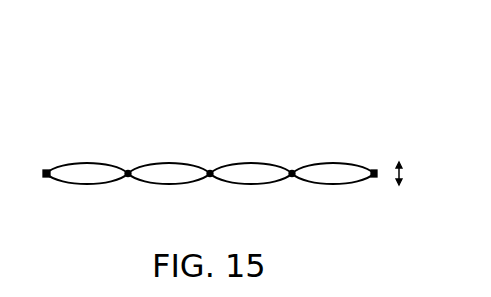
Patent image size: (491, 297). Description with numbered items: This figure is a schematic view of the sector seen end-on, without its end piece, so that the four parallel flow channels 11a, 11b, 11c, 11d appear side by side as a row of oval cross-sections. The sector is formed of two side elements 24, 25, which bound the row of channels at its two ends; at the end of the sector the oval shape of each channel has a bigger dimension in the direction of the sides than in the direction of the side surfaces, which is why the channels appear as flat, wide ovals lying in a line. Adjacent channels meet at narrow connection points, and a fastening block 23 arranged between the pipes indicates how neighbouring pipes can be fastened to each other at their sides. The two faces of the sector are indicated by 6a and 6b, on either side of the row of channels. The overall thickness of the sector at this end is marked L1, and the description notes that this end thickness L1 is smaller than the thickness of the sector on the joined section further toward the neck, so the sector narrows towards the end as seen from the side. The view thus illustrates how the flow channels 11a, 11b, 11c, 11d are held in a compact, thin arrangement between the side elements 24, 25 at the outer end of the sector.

The first side of bead chain 6a is at (275, 82).
The second side of bead chain 6b is at (304, 218).
The flow channel 11a is at (90, 172).
The flow channel 11b is at (173, 172).
The flow channel 11c is at (250, 172).
The flow channel 11d is at (335, 172).
The fastening block 23 is at (128, 176).
The side element 24 is at (58, 167).
The side element 25 is at (70, 184).
The thickness at the end L1 is at (416, 174).